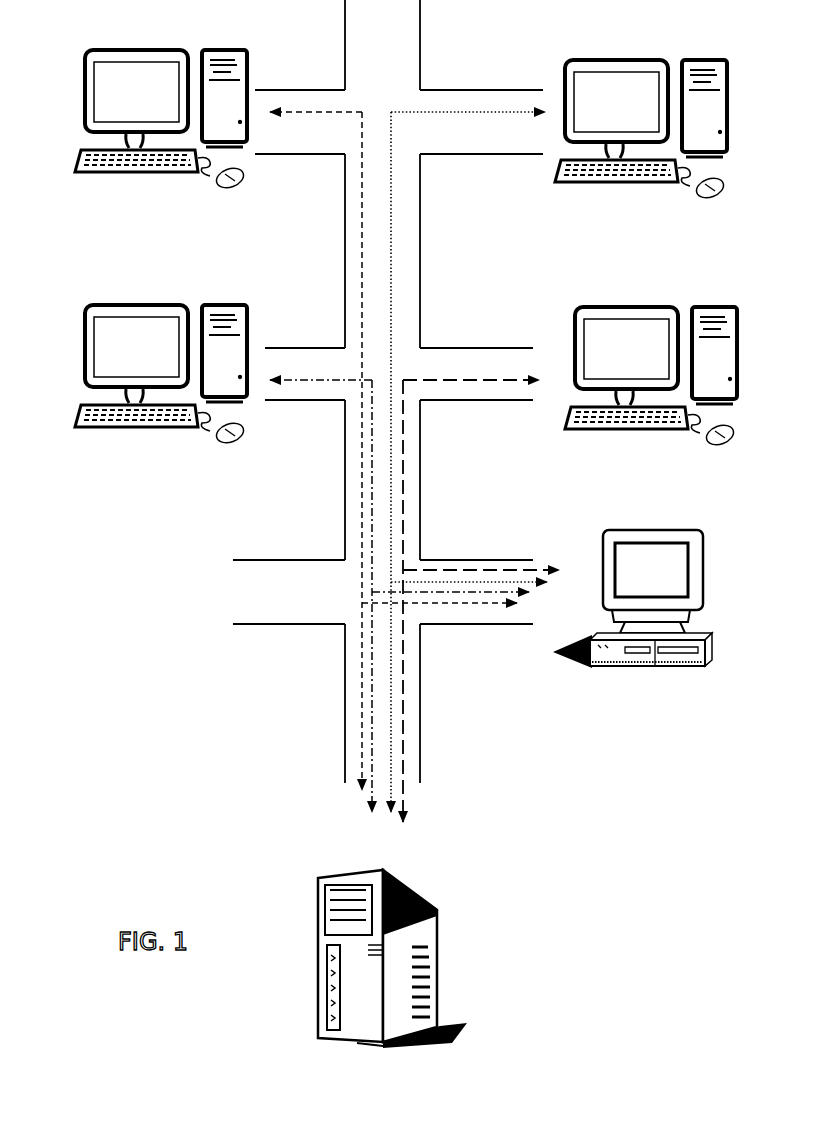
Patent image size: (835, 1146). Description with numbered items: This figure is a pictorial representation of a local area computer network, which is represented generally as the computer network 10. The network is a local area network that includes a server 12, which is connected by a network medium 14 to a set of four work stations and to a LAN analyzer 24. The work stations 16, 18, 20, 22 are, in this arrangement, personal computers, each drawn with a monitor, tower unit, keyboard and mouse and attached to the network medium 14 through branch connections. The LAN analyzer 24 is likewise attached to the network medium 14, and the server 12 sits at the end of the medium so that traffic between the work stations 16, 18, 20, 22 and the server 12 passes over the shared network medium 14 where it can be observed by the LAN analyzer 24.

The computer network 10 is at (42, 262).
The server 12 is at (403, 932).
The network medium 14 is at (393, 527).
The work station 16 is at (127, 68).
The work station 18 is at (125, 323).
The work station 20 is at (638, 78).
The work station 22 is at (640, 322).
The LAN analyzer 24 is at (652, 554).